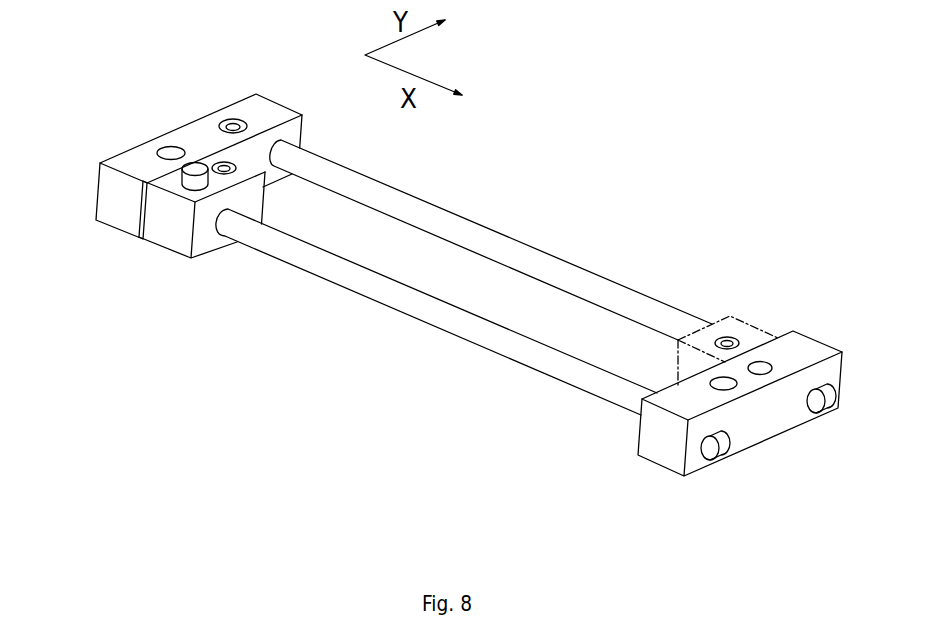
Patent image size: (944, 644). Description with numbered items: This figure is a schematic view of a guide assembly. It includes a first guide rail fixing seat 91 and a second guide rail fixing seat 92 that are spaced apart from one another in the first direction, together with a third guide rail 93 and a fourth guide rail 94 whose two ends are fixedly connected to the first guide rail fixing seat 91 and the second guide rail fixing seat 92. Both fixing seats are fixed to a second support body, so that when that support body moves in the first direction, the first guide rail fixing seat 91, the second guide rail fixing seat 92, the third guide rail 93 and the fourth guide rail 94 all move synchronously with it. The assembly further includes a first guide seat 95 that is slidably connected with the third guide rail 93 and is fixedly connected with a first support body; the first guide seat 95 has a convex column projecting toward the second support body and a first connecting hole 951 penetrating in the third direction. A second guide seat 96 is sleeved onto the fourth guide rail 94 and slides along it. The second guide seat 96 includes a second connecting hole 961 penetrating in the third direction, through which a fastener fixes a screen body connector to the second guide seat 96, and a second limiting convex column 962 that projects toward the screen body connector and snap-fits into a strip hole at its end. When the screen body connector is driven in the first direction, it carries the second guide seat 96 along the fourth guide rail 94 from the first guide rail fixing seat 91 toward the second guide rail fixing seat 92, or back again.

The first guide rail fixing seat 91 is at (108, 198).
The second guide rail fixing seat 92 is at (672, 445).
The third guide rail 93 is at (537, 263).
The fourth guide rail 94 is at (398, 297).
The first guide seat 95 is at (747, 330).
The first connecting hole 951 is at (723, 338).
The second guide seat 96 is at (175, 233).
The second connecting hole 961 is at (228, 120).
The second limiting convex column 962 is at (203, 160).